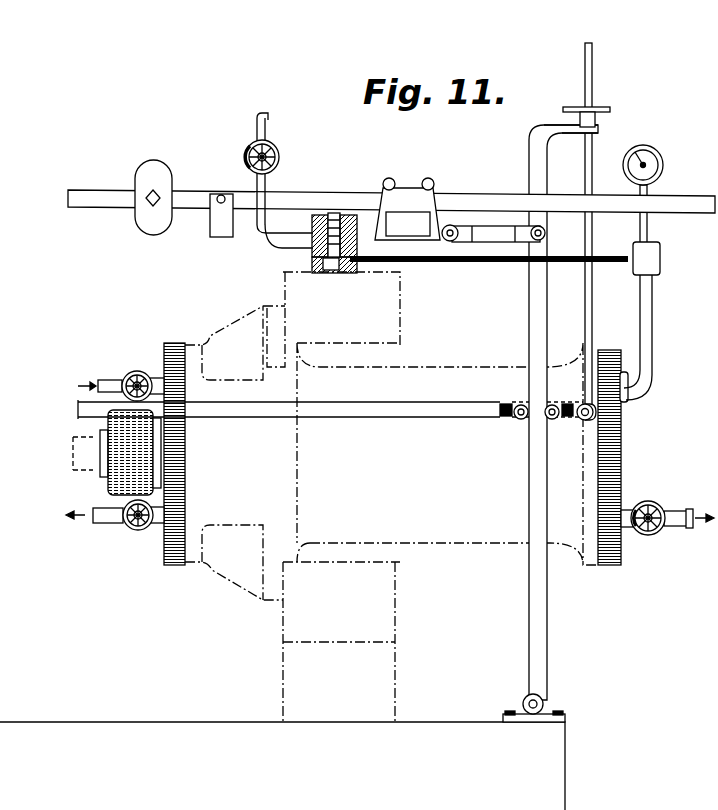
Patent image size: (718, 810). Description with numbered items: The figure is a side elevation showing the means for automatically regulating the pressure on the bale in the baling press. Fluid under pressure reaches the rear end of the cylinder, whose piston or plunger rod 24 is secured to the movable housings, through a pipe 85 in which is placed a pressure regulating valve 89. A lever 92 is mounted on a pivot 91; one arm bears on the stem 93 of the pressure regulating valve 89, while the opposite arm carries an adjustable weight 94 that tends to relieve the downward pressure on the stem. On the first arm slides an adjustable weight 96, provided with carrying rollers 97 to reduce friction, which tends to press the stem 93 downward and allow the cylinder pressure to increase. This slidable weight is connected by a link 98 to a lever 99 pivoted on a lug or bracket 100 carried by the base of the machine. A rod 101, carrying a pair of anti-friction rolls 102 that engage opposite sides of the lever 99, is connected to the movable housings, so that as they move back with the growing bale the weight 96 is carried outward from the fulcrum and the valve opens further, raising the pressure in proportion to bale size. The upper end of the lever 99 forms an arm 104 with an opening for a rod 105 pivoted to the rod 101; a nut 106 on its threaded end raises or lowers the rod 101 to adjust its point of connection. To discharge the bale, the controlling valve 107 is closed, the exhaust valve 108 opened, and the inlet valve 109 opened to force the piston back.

The piston or plunger rod 24 is at (73, 456).
The pipe 85 is at (505, 263).
The pressure regulating valve 89 is at (347, 215).
The pivot 91 is at (221, 195).
The lever 92 is at (477, 198).
The stem 93 is at (327, 215).
The adjustable weight 94 is at (158, 222).
The adjustable weight 96 is at (403, 208).
The carrying rollers 97 is at (432, 178).
The link 98 is at (482, 235).
The lever 99 is at (529, 328).
The lug or bracket 100 is at (511, 714).
The rod 101 is at (453, 412).
The anti-friction rolls 102 is at (548, 420).
The arm 104 is at (558, 123).
The rod 105 is at (592, 165).
The nut 106 is at (599, 107).
The controlling valve 107 is at (272, 143).
The exhaust valve 108 is at (652, 503).
The inlet valve 109 is at (134, 372).